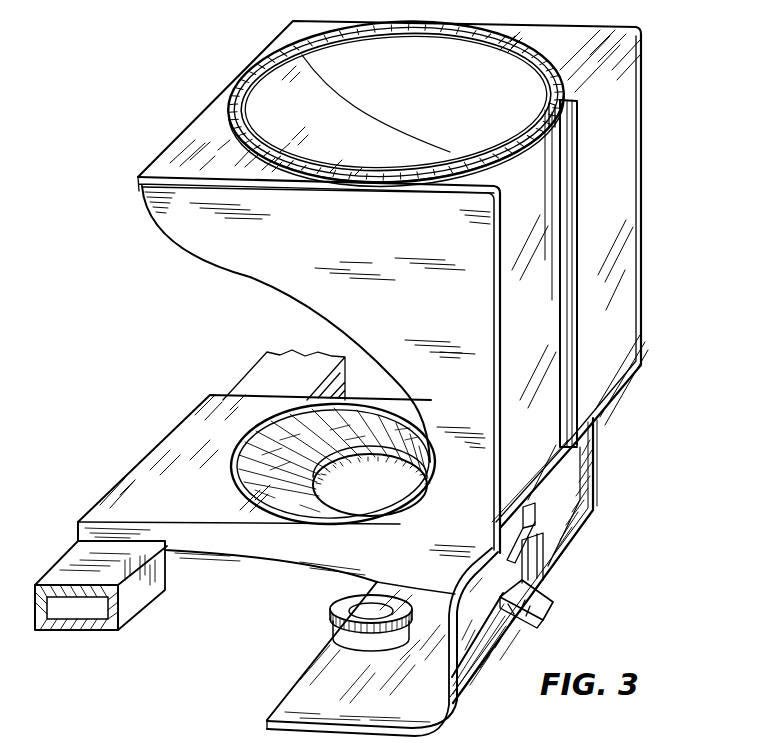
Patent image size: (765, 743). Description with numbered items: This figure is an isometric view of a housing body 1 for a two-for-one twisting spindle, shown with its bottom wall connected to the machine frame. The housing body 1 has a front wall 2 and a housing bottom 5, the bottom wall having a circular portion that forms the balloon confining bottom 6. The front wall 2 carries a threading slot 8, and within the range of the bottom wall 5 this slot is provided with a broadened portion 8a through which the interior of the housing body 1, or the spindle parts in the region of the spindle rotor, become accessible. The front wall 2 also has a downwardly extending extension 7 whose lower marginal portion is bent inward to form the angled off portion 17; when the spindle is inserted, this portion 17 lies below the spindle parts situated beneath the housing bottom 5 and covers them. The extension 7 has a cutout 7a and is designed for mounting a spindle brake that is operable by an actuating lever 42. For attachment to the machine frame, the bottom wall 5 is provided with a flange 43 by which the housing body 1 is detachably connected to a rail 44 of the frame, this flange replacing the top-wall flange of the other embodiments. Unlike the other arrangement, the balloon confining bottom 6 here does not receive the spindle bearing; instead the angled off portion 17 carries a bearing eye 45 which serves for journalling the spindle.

The housing body 1 is at (661, 240).
The front wall 2 is at (622, 302).
The housing bottom 5 is at (265, 538).
The balloon confining bottom 6 is at (290, 432).
The extension 7 is at (572, 507).
The cutout 7a is at (517, 630).
The threading slot 8 is at (573, 195).
The broadened portion 8a is at (535, 512).
The inwardly bent section 17 is at (335, 676).
The actuating lever 42 is at (550, 600).
The flange 43 is at (183, 443).
The rail 44 is at (88, 605).
The bearing eye 45 is at (340, 612).